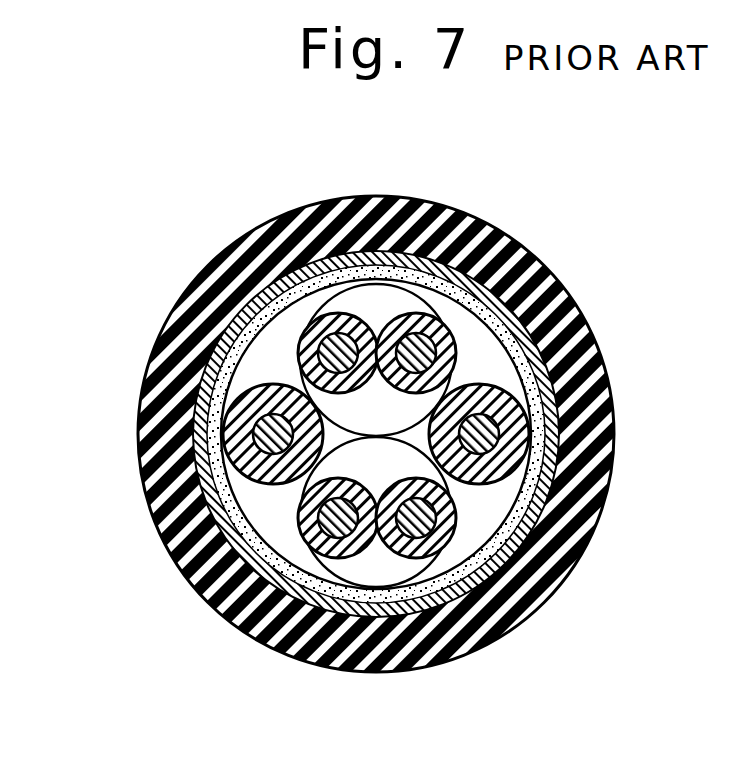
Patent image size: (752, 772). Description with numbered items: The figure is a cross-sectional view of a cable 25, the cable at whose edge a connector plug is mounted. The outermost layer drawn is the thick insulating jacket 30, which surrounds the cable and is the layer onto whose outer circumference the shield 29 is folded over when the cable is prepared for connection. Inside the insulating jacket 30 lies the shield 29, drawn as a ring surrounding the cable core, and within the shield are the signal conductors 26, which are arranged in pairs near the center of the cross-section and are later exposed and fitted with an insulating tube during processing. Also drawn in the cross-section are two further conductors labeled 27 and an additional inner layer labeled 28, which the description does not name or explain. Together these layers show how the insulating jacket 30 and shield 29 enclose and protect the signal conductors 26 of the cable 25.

The cable 25 is at (475, 208).
The signal conductor 26 is at (343, 302).
The single insulated conductors 27 is at (238, 437).
The inner sheath / shield layer 28 is at (530, 350).
The shield 29 is at (492, 308).
The insulating jacket 30 is at (553, 545).